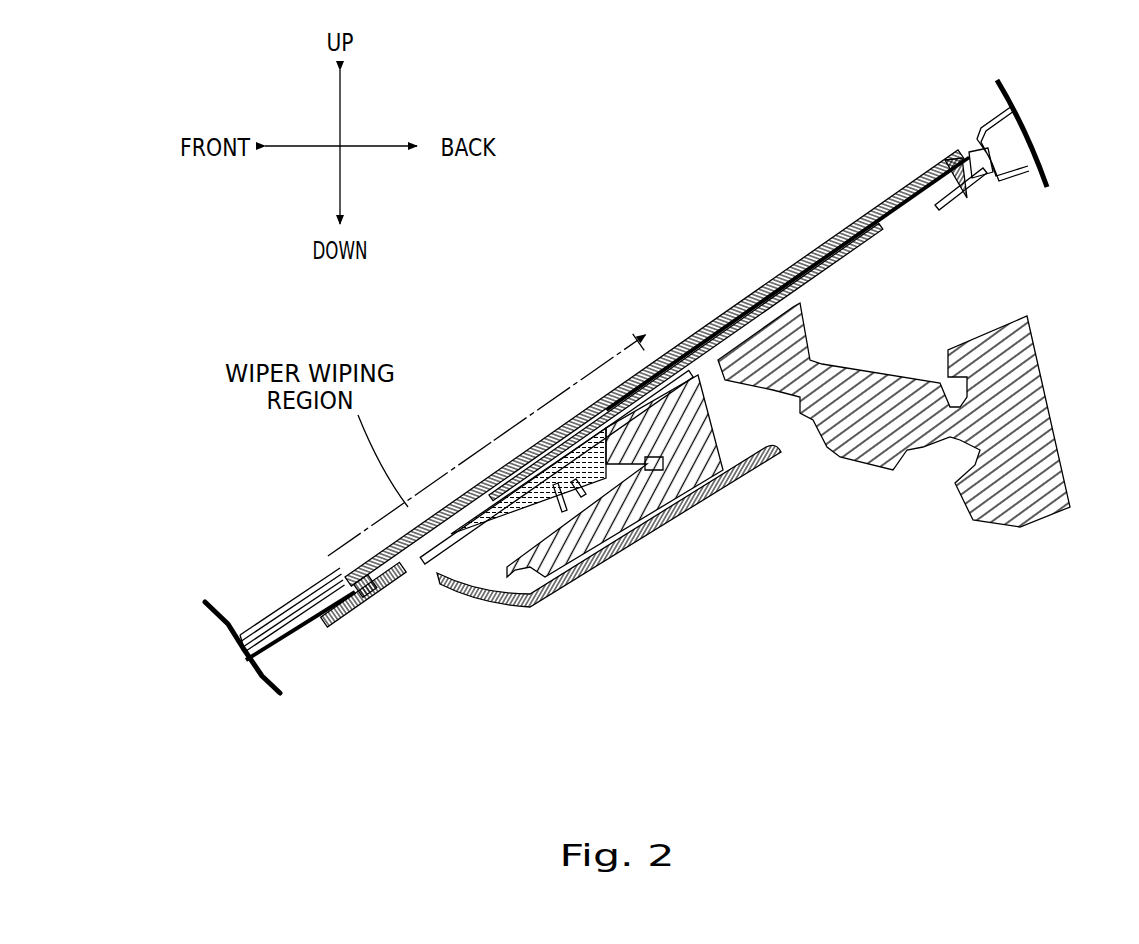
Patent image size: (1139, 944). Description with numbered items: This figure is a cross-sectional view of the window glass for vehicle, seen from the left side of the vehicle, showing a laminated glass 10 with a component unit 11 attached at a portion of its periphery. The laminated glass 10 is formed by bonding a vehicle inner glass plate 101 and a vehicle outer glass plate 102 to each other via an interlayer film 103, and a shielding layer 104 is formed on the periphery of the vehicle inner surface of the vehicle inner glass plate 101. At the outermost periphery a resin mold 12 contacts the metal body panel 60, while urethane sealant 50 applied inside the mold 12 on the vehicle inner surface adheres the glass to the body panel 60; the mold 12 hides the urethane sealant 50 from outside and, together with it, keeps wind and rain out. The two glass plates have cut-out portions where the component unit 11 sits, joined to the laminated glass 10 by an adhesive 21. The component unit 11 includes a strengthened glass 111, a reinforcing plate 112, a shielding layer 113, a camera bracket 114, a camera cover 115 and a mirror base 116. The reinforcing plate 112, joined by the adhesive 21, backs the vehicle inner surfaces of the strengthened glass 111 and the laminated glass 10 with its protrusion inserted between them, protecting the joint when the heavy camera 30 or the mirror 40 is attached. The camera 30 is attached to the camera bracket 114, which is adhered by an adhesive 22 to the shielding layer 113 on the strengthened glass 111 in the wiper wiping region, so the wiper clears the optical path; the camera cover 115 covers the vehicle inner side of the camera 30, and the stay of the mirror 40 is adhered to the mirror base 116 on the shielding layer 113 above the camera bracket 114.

The laminated glass 10 is at (255, 594).
The component unit 11 is at (655, 339).
The mold 12 is at (975, 152).
The adhesive 21 is at (335, 575).
The adhesive 22 is at (638, 352).
The camera 30 is at (713, 435).
The mirror 40 is at (1048, 388).
The urethane sealant 50 is at (965, 188).
The body panel 60 is at (982, 122).
The vehicle inner glass plate 101 is at (262, 636).
The vehicle outer glass plate 102 is at (283, 628).
The interlayer film 103 is at (277, 652).
The shielding layer 104 is at (298, 640).
The strengthened glass 111 is at (813, 253).
The reinforcing plate 112 is at (370, 600).
The shielding layer 113 is at (905, 210).
The camera bracket 114 is at (545, 478).
The camera cover 115 is at (600, 575).
The mirror base 116 is at (843, 248).